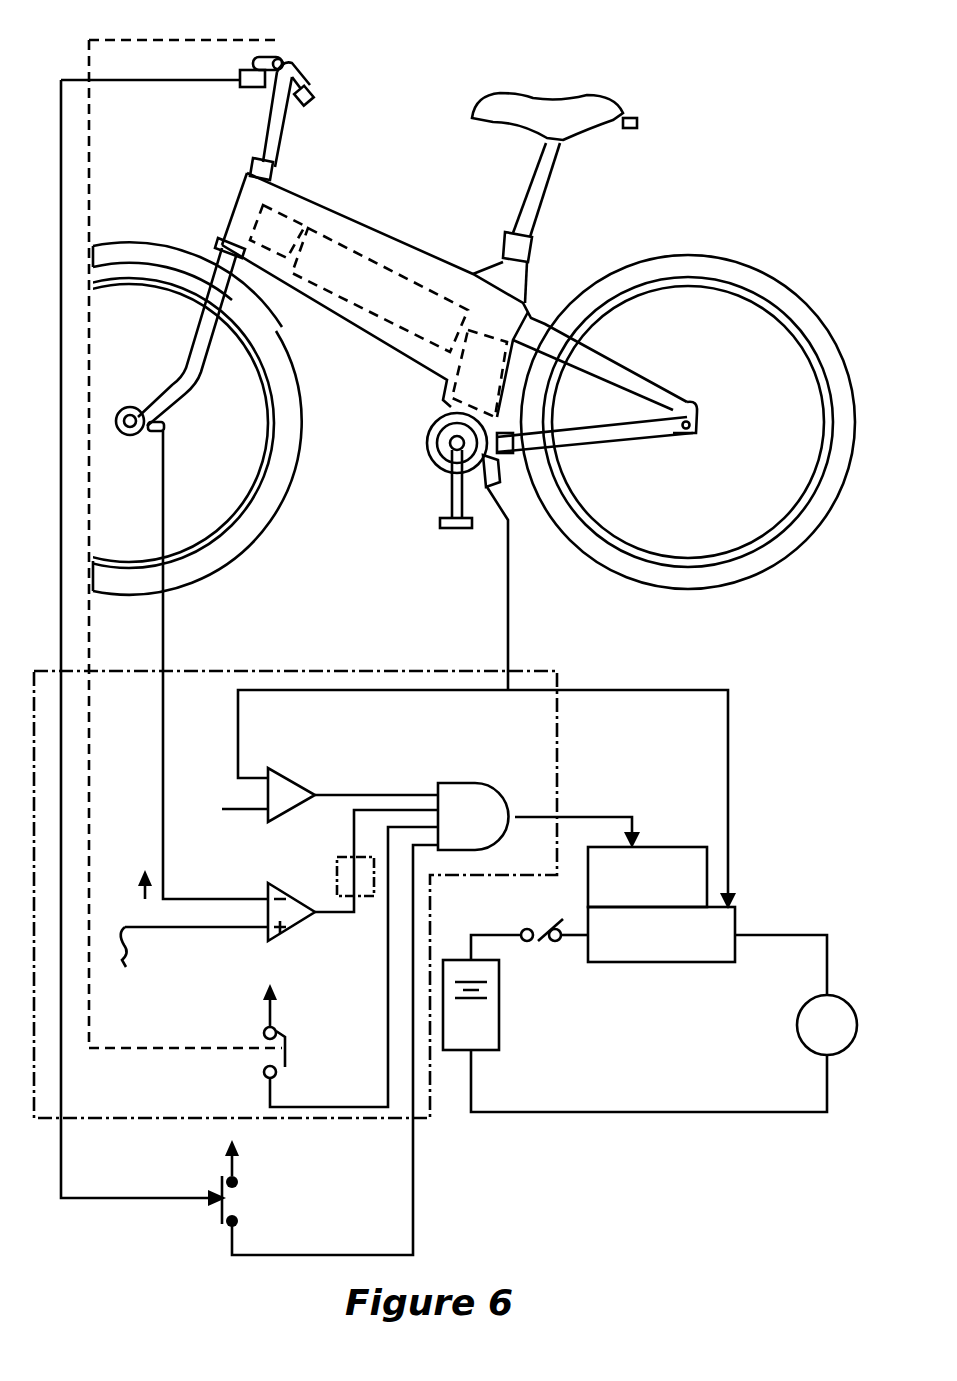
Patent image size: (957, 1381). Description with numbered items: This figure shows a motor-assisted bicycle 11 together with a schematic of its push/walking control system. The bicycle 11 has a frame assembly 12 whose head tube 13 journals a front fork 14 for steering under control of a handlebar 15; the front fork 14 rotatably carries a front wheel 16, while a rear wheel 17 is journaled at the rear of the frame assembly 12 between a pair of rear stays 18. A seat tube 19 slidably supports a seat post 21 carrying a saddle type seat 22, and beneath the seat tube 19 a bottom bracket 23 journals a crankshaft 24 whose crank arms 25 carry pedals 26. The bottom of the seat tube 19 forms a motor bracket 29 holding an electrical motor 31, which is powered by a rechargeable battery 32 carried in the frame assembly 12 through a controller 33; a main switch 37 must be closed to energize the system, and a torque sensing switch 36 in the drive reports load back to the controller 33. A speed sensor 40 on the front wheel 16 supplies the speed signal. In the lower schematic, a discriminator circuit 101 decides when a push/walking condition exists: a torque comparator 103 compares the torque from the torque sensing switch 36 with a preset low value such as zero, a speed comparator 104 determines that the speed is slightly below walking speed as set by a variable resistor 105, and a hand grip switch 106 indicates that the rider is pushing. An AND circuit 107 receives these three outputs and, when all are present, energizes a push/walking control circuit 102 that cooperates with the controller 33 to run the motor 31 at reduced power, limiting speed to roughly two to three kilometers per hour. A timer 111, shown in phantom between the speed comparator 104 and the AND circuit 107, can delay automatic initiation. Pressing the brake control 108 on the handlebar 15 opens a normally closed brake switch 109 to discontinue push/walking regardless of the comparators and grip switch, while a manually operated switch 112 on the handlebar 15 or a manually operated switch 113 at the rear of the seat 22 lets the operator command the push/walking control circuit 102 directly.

The bicycle 11 is at (768, 176).
The frame assembly 12 is at (368, 218).
The head tube 13 is at (233, 210).
The front fork 14 is at (200, 311).
The handlebar 15 is at (294, 70).
The front wheel 16 is at (177, 253).
The rear wheel 17 is at (727, 257).
The rear stays 18 is at (627, 435).
The seat tube 19 is at (535, 250).
The seat post 21 is at (560, 171).
The seat 22 is at (590, 93).
The bottom bracket 23 is at (437, 463).
The crankshaft 24 is at (447, 442).
The crank arms 25 is at (453, 500).
The pedals 26 is at (467, 533).
The motor bracket 29 is at (447, 390).
The electrical motor 31 is at (443, 410).
The battery 32 is at (410, 273).
The controller 33 is at (287, 213).
The torque sensing switch 36 is at (500, 478).
The main switch 37 is at (546, 944).
The speed sensor 40 is at (165, 426).
The discriminator circuit 101 is at (305, 660).
The push/walking control circuit 102 is at (655, 843).
The torque comparator 103 is at (290, 781).
The speed comparator 104 is at (283, 888).
The variable resistor 105 is at (147, 963).
The hand grip switch 106 is at (278, 1033).
The AND circuit 107 is at (452, 782).
The brake control 108 is at (243, 90).
The brake switch 109 is at (247, 1202).
The timer 111 is at (367, 900).
The manually operated switch 112 is at (314, 95).
The manually operated switch 113 is at (637, 123).